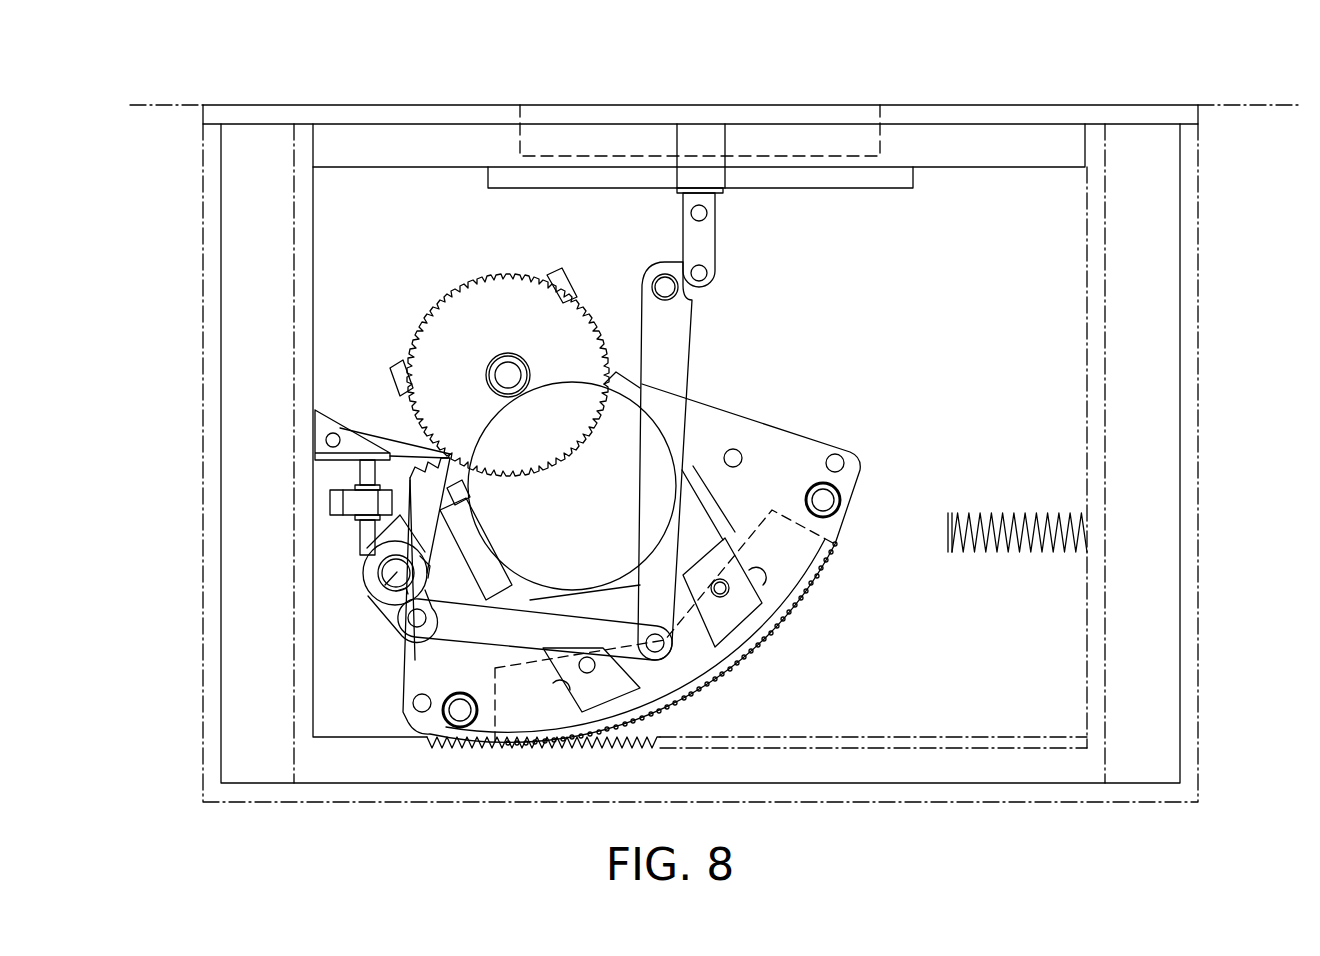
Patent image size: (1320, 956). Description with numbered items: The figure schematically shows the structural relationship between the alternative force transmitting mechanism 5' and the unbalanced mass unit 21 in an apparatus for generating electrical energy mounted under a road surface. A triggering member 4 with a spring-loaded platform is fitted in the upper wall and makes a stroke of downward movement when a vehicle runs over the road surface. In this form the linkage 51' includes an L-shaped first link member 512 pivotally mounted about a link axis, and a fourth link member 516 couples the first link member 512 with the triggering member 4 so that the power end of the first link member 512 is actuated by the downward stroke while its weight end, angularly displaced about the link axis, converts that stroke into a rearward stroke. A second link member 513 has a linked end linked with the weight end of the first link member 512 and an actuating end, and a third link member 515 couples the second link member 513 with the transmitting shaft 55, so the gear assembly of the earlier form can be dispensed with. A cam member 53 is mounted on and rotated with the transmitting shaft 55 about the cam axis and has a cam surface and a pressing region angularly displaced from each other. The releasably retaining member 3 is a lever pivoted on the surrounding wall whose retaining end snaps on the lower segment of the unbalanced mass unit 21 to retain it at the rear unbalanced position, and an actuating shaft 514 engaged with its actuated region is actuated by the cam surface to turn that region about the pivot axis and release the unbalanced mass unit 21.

The triggering member 4 is at (803, 122).
The unbalanced mass unit 21 is at (548, 268).
The fourth link member 516 is at (704, 242).
The force transmitting mechanism 5' is at (665, 429).
The first link member 512 is at (676, 320).
The linkage 51' is at (631, 546).
The releasably retaining member 3 is at (383, 432).
The actuating shaft 514 is at (365, 535).
The cam member 53 is at (395, 573).
The transmitting shaft 55 is at (412, 598).
The third link member 515 is at (428, 568).
The second link member 513 is at (510, 632).